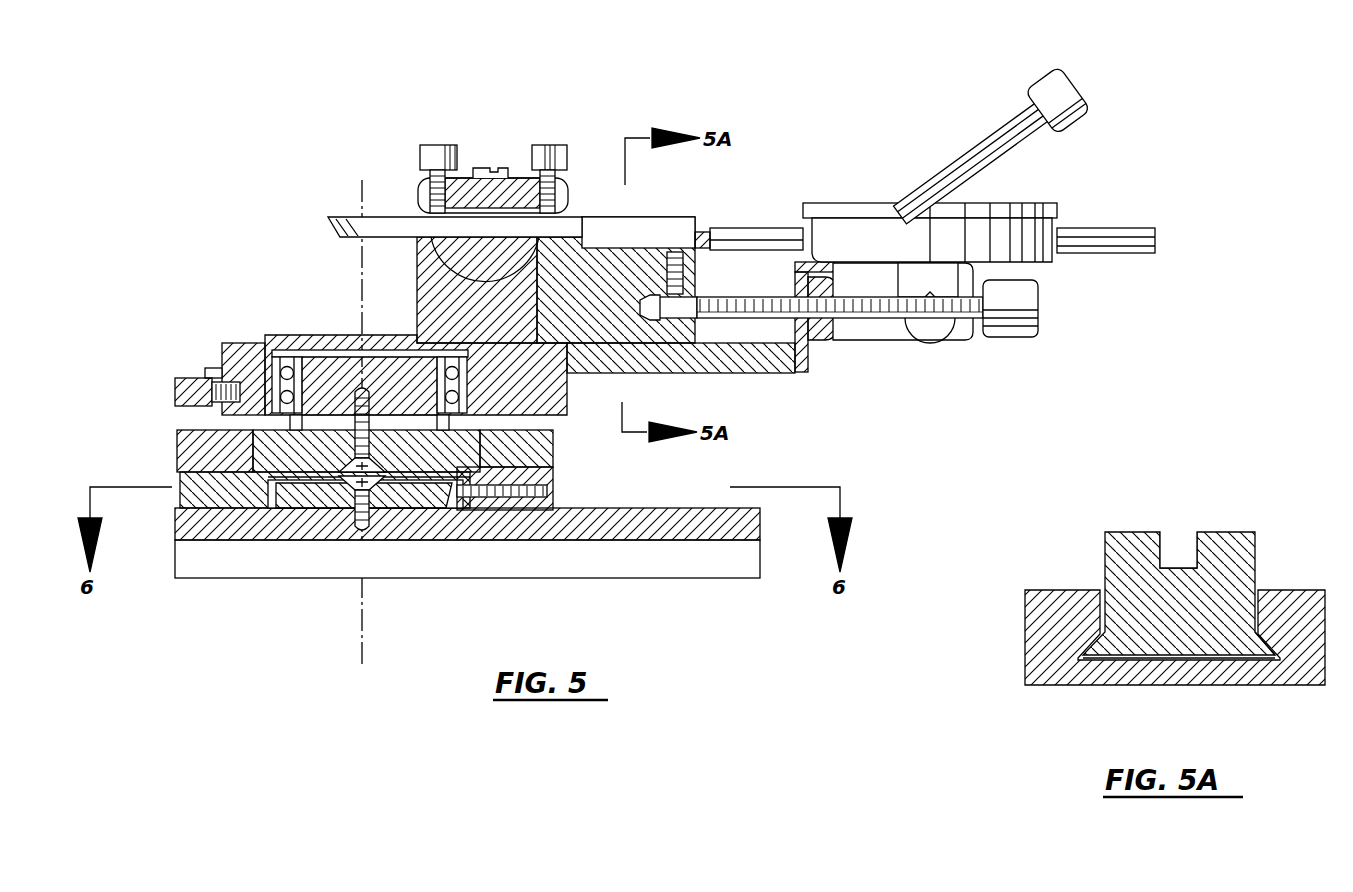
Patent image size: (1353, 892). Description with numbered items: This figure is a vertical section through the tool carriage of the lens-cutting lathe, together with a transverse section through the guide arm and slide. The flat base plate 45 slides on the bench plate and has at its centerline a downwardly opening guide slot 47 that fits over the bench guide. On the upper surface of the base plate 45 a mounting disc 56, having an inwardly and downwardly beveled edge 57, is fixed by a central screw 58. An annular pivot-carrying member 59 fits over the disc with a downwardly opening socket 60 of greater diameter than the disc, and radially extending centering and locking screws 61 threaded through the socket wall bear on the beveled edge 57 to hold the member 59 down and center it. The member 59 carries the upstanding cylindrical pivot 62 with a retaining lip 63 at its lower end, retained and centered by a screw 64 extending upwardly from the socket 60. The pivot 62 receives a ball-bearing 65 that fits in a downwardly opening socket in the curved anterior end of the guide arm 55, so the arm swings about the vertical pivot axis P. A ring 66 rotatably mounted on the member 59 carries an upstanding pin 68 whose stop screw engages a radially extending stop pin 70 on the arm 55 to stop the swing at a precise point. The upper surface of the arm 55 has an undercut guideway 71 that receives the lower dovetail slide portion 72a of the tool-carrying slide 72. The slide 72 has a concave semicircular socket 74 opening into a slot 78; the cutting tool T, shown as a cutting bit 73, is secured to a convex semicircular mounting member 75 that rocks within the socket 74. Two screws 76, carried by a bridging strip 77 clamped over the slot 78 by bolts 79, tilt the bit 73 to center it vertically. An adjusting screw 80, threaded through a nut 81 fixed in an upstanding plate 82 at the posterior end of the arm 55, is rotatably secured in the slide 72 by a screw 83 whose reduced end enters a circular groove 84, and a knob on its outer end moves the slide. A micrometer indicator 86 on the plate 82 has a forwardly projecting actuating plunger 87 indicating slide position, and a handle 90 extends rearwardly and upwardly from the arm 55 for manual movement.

In FIG. 5, the base plate 45 is at (648, 510).
In FIG. 5, the guide slot 47 is at (578, 563).
In FIG. 5, the guide arm 55 is at (263, 372).
In FIG. 5A, the guide arm 55 is at (1035, 632).
In FIG. 5, the mounting disc 56 is at (330, 500).
In FIG. 5, the beveled edge 57 is at (277, 496).
In FIG. 5, the screw 58 is at (372, 522).
In FIG. 5, the pivot-carrying member 59 is at (190, 490).
In FIG. 5, the socket 60 is at (465, 505).
In FIG. 5, the centering and locking screws 61 is at (548, 490).
In FIG. 5, the pivot 62 is at (343, 378).
In FIG. 5, the retaining lip 63 is at (298, 418).
In FIG. 5, the screw 64 is at (370, 396).
In FIG. 5, the ball-bearing 65 is at (462, 390).
In FIG. 5, the ring 66 is at (180, 446).
In FIG. 5, the pin 68 is at (211, 368).
In FIG. 5, the stop pin 70 is at (178, 392).
In FIG. 5A, the guideway 71 is at (1165, 664).
In FIG. 5, the tool-carrying slide 72 is at (600, 262).
In FIG. 5A, the tool-carrying slide 72 is at (1213, 535).
In FIG. 5, the dovetail slide portion 72a is at (625, 345).
In FIG. 5A, the dovetail slide portion 72a is at (1248, 657).
In FIG. 5, the cutting bit 73 is at (395, 215).
In FIG. 5, the semicircular socket 74 is at (445, 293).
In FIG. 5, the mounting member 75 is at (455, 256).
In FIG. 5, the screws 76 is at (438, 145).
In FIG. 5, the bridging strip 77 is at (470, 176).
In FIG. 5, the slot 78 is at (655, 228).
In FIG. 5A, the slot 78 is at (1178, 550).
In FIG. 5, the bolts 79 is at (517, 172).
In FIG. 5, the adjusting screw 80 is at (876, 333).
In FIG. 5, the nut 81 is at (822, 345).
In FIG. 5, the upstanding plate 82 is at (800, 374).
In FIG. 5, the screw 83 is at (668, 282).
In FIG. 5, the circular groove 84 is at (690, 318).
In FIG. 5, the micrometer indicator 86 is at (1030, 205).
In FIG. 5, the actuating plunger 87 is at (706, 230).
In FIG. 5, the handle 90 is at (985, 165).
In FIG. 5, the cutting tool T is at (345, 212).
In FIG. 5, the pivot axis P is at (360, 258).